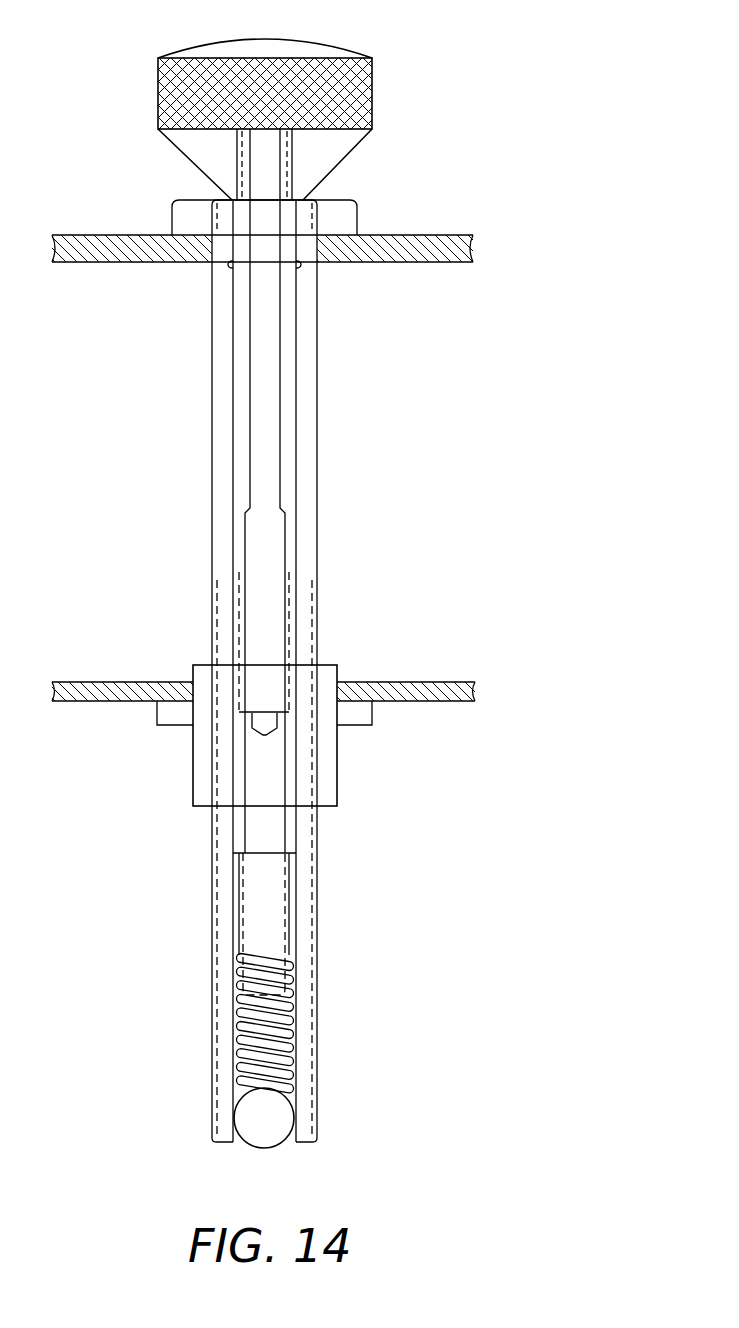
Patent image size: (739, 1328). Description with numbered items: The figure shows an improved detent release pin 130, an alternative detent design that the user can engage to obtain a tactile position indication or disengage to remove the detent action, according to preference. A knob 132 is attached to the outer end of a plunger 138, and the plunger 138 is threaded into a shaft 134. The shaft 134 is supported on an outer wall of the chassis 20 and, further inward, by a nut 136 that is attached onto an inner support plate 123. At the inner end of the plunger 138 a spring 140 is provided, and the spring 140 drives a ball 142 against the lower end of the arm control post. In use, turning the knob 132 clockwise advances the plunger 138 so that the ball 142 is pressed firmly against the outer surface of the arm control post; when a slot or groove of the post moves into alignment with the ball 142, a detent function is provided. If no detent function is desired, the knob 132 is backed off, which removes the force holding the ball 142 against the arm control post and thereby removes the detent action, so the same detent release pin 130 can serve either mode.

The detent release pin 130 is at (470, 113).
The knob 132 is at (357, 82).
The chassis 20 is at (428, 243).
The shaft 134 is at (302, 545).
The inner support plate 123 is at (437, 682).
The nut 136 is at (352, 718).
The plunger 138 is at (268, 902).
The spring 140 is at (285, 1022).
The ball 142 is at (273, 1118).